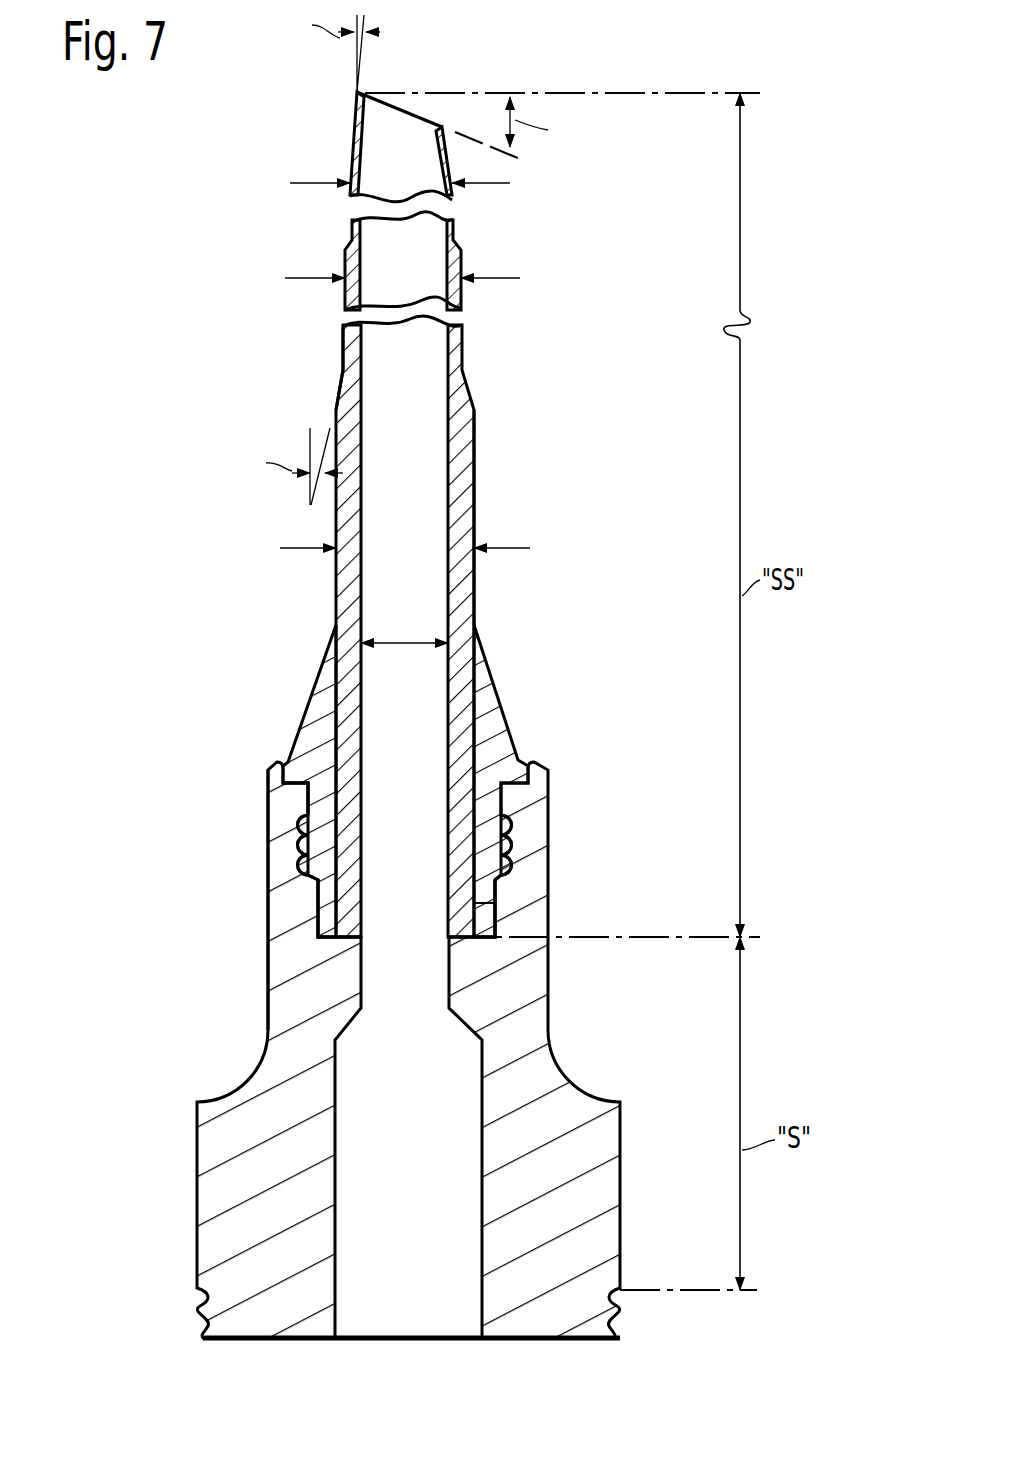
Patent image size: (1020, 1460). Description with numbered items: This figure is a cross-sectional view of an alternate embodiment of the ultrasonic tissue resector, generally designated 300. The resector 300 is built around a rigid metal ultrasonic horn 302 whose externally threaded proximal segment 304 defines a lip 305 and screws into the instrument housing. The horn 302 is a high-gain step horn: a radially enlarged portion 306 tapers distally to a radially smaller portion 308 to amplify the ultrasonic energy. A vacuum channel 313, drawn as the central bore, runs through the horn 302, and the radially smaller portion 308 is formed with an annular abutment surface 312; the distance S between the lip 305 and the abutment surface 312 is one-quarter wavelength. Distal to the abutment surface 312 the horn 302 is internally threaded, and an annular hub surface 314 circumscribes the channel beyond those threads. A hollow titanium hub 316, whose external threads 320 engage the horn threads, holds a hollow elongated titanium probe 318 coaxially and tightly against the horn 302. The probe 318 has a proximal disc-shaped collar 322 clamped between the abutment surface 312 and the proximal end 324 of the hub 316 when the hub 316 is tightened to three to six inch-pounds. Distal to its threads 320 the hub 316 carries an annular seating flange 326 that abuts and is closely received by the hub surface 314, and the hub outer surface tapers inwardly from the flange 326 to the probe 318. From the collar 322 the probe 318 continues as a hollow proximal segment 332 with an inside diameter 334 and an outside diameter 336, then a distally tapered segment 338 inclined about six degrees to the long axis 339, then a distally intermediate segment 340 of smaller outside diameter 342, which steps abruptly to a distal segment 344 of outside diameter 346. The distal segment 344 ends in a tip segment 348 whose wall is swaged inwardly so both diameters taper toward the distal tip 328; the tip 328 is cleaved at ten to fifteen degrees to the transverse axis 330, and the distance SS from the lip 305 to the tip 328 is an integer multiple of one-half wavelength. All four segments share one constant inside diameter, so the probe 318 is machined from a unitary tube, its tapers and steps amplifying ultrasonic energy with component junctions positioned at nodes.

The resector 300 is at (205, 582).
The ultrasonic horn 302 is at (598, 1192).
The externally threaded proximal segment 304 is at (200, 1310).
The lip 305 is at (620, 1295).
The radially enlarged portion 306 is at (197, 1140).
The radially smaller portion 308 is at (283, 918).
The annular abutment surface 312 is at (328, 945).
The passageway 313 is at (428, 1198).
The annular hub surface 314 is at (300, 792).
The hub 316 is at (505, 737).
The probe 318 is at (475, 585).
The external threads 320 is at (300, 866).
The proximal disc-shaped collar 322 is at (482, 940).
The proximal end of the hub 324 is at (506, 868).
The annular seating flange 326 is at (292, 745).
The distal tip 328 is at (354, 95).
The transverse axis 330 is at (598, 93).
The proximal segment 332 is at (462, 467).
The inside diameter 334 is at (392, 641).
The outside diameter 336 is at (292, 548).
The distally tapered segment 338 is at (340, 396).
The long axis 339 is at (311, 430).
The distally intermediate segment 340 is at (343, 336).
The outside diameter 342 is at (304, 278).
The distal segment 344 is at (348, 229).
The outside diameter 346 is at (310, 183).
The tip segment 348 is at (352, 138).